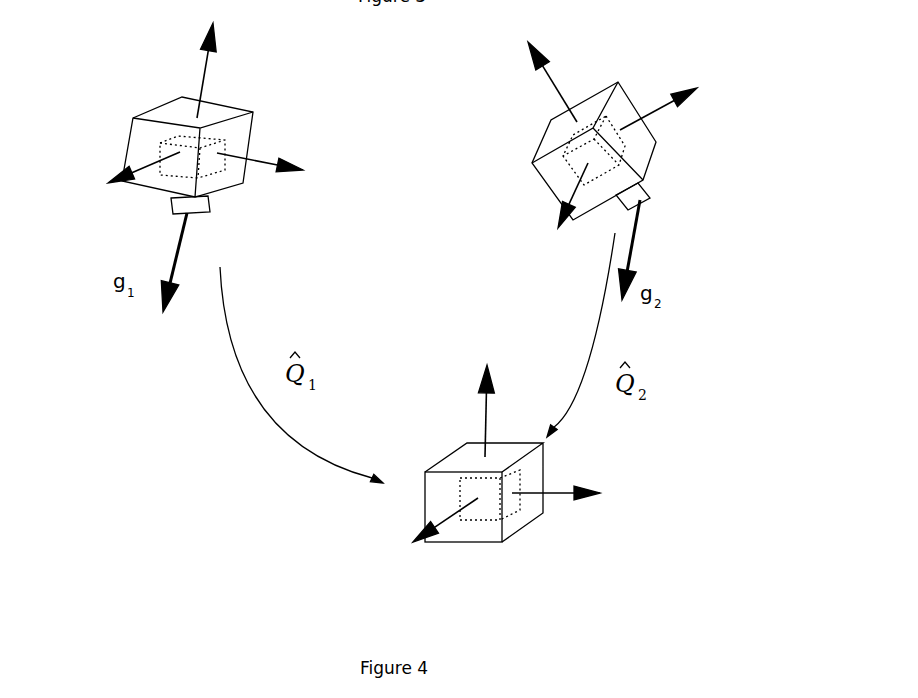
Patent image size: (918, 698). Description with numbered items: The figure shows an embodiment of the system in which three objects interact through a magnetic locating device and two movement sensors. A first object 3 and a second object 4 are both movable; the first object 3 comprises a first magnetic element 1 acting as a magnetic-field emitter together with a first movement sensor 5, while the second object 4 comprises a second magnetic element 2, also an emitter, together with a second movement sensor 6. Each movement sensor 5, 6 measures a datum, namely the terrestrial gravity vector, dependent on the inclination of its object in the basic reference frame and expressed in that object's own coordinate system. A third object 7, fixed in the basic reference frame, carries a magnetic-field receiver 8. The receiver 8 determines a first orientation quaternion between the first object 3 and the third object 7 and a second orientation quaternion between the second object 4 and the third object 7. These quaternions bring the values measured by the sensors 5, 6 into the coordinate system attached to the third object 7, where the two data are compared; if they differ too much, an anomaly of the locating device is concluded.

The first magnetic element 1 is at (167, 140).
The second magnetic element 2 is at (572, 143).
The first object 3 is at (113, 209).
The second object 4 is at (528, 210).
The first movement sensor 5 is at (202, 207).
The second movement sensor 6 is at (650, 204).
The third object 7 is at (422, 565).
The magnetic-field receiver 8 is at (463, 480).